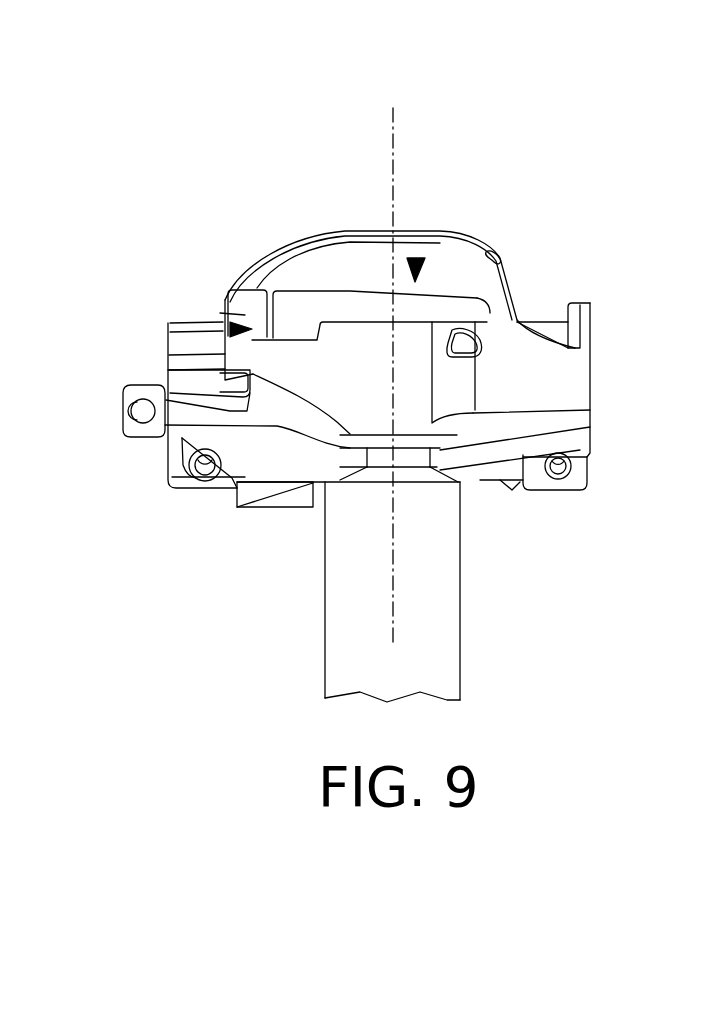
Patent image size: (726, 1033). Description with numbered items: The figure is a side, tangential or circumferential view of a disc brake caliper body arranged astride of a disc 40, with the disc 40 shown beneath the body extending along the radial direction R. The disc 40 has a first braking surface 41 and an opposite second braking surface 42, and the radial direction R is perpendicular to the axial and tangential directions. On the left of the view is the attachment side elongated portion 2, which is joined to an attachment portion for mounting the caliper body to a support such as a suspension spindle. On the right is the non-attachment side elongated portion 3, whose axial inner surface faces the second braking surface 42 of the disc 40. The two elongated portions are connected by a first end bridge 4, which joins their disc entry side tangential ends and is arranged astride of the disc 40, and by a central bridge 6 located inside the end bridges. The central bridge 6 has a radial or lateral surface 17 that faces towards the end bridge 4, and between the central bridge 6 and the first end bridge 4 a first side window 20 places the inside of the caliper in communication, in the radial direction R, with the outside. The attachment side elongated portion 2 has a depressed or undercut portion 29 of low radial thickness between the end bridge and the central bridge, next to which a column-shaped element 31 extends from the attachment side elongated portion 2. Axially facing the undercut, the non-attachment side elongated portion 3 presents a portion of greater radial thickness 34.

The attachment side elongated portion 2 is at (178, 375).
The non-attachment side elongated portion 3 is at (580, 381).
The first end bridge 4 is at (368, 402).
The central bridge 6 is at (462, 272).
The radial or lateral surface 17 is at (350, 267).
The first side window 20 is at (420, 256).
The depressed or undercut portion 29 is at (168, 325).
The column-shaped element 31 is at (229, 312).
The portion of greater radial thickness 34 is at (519, 320).
The disc 40 is at (425, 540).
The first braking surface 41 is at (326, 578).
The second braking surface 42 is at (462, 598).
The radial direction R is at (393, 140).